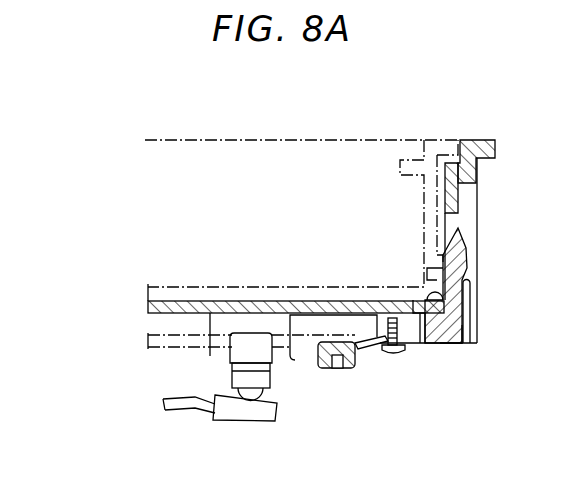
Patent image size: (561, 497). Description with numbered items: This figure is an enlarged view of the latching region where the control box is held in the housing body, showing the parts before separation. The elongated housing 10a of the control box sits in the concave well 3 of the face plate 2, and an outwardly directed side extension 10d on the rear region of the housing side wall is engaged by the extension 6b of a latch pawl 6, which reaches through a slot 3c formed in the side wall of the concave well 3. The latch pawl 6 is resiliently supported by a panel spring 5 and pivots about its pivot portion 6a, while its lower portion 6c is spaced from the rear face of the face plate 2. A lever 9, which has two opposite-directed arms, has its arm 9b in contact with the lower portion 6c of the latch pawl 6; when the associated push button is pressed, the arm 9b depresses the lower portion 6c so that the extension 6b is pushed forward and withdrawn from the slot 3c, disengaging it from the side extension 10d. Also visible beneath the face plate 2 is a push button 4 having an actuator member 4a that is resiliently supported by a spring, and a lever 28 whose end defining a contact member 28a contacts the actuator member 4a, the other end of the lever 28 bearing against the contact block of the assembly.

The face plate 2 is at (488, 109).
The concave well 3 is at (433, 344).
The slot 3c is at (452, 222).
The push button 4 is at (265, 356).
The actuator member 4a is at (260, 403).
The panel spring 5 is at (467, 305).
The latch pawl 6 is at (465, 257).
The pivot portion 6a is at (460, 344).
The extension 6b is at (439, 250).
The lower portion 6c is at (368, 353).
The lever 9 is at (237, 336).
The arm 9b is at (335, 368).
The elongated housing 10a is at (431, 139).
The side extension 10d is at (430, 259).
The lever 28 is at (182, 406).
The contact member 28a is at (240, 427).